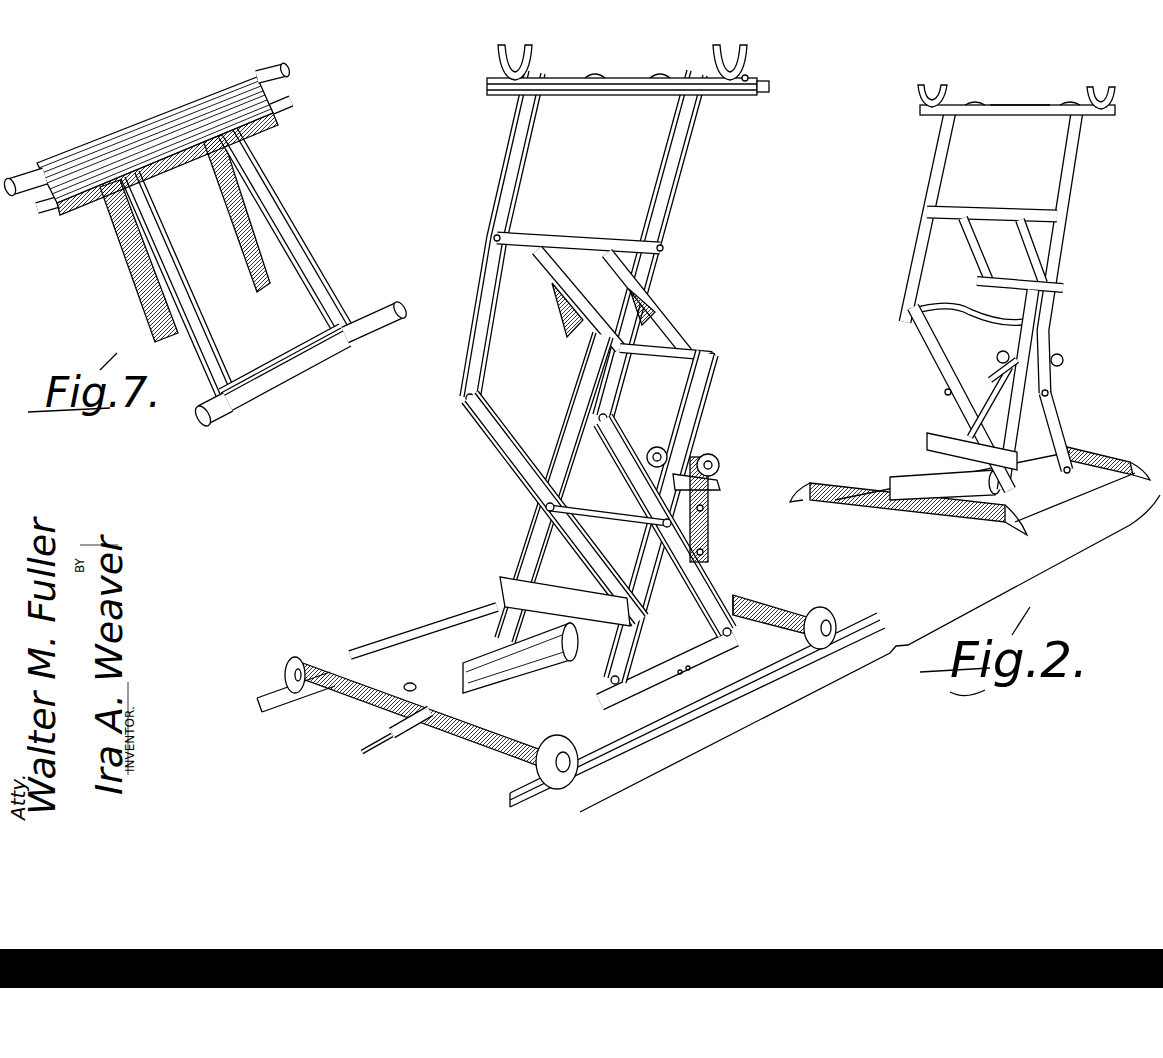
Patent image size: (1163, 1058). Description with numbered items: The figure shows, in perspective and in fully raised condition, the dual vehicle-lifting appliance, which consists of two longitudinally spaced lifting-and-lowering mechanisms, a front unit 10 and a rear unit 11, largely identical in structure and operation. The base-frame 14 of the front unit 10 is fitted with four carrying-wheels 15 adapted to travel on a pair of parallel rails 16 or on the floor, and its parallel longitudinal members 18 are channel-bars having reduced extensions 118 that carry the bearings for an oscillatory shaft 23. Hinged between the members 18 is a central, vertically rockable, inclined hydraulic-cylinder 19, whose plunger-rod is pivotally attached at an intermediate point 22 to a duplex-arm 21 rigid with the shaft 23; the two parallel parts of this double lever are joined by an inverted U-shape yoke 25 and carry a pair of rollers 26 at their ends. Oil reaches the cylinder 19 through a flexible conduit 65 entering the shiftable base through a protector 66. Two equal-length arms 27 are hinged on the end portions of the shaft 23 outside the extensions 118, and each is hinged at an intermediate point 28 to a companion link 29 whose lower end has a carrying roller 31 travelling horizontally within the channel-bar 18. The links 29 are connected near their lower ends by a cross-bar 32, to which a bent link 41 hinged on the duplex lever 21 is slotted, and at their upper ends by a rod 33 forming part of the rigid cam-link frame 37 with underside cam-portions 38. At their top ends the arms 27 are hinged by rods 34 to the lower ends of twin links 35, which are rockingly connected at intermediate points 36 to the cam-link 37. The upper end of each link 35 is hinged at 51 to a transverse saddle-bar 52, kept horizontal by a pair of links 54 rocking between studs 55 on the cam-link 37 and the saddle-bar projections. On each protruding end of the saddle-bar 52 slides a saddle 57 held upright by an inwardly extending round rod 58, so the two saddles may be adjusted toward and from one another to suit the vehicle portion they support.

In FIG. 2, the front lifting-and-lowering mechanism 10 is at (640, 705).
In FIG. 2, the rear lifting-and-lowering mechanism 11 is at (1078, 509).
In FIG. 2, the base-frame 14 is at (795, 605).
In FIG. 2, the carrying-wheels 15 is at (833, 618).
In FIG. 2, the rails 16 is at (285, 706).
In FIG. 2, the longitudinal frame members 18 is at (885, 482).
In FIG. 2, the hydraulic-cylinder 19 is at (505, 657).
In FIG. 2, the duplex-arm 21 is at (708, 540).
In FIG. 2, the plunger-rod pivot point 22 is at (708, 554).
In FIG. 2, the shaft 23 is at (738, 641).
In FIG. 2, the inverted U-shape yoke 25 is at (718, 480).
In FIG. 2, the rollers 26 is at (655, 446).
In FIG. 2, the arms 27 is at (500, 440).
In FIG. 2, the intermediate hinge point 28 is at (545, 507).
In FIG. 2, the companion link 29 is at (578, 408).
In FIG. 2, the carrying roller 31 is at (595, 692).
In FIG. 2, the cross-bar 32 is at (528, 592).
In FIG. 7, the shaft 33 is at (393, 307).
In FIG. 2, the shaft 33 is at (716, 357).
In FIG. 2, the shafts 34 is at (468, 404).
In FIG. 2, the twin links 35 is at (507, 178).
In FIG. 7, the intermediate connection points 36 is at (267, 80).
In FIG. 2, the intermediate connection points 36 is at (490, 240).
In FIG. 7, the cam-link 37 is at (125, 138).
In FIG. 2, the cam-link 37 is at (566, 272).
In FIG. 7, the cam-portions 38 is at (245, 237).
In FIG. 2, the cam-portions 38 is at (560, 318).
In FIG. 2, the bent link 41 is at (560, 530).
In FIG. 2, the saddle-bar hinge 51 is at (712, 98).
In FIG. 2, the saddle-bar 52 is at (770, 92).
In FIG. 2, the links 54 is at (540, 168).
In FIG. 7, the studs 55 is at (290, 103).
In FIG. 2, the saddle 57 is at (528, 60).
In FIG. 2, the round rod 58 is at (750, 78).
In FIG. 2, the conduit 65 is at (372, 757).
In FIG. 2, the protector 66 is at (395, 725).
In FIG. 2, the frame extensions 118 is at (765, 598).